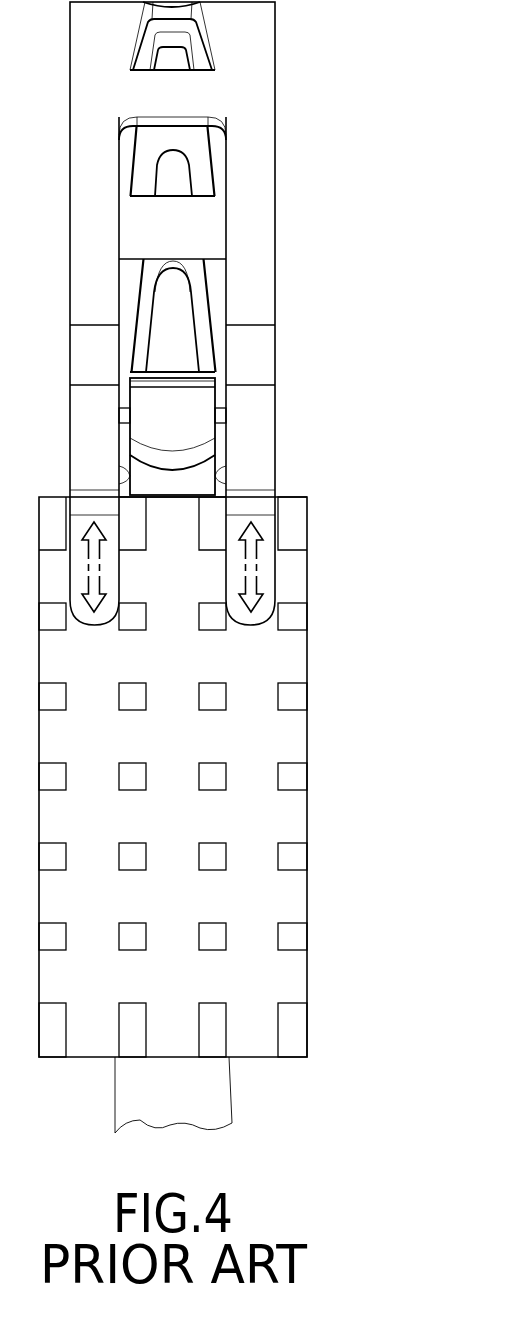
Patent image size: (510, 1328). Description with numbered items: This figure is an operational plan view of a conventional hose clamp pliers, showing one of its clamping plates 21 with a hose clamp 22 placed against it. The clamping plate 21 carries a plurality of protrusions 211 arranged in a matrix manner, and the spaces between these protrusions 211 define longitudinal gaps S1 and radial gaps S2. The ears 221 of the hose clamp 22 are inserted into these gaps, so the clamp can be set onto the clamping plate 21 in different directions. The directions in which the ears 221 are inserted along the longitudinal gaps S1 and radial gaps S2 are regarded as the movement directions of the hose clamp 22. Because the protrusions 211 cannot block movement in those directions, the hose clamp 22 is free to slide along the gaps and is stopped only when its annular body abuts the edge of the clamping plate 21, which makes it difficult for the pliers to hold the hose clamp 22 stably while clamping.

The hose clamp 22 is at (263, 155).
The clamping plate 21 is at (307, 648).
The protrusion 211 is at (298, 528).
The ear 221 is at (270, 583).
The longitudinal gap S1 is at (275, 512).
The radial gap S2 is at (290, 565).